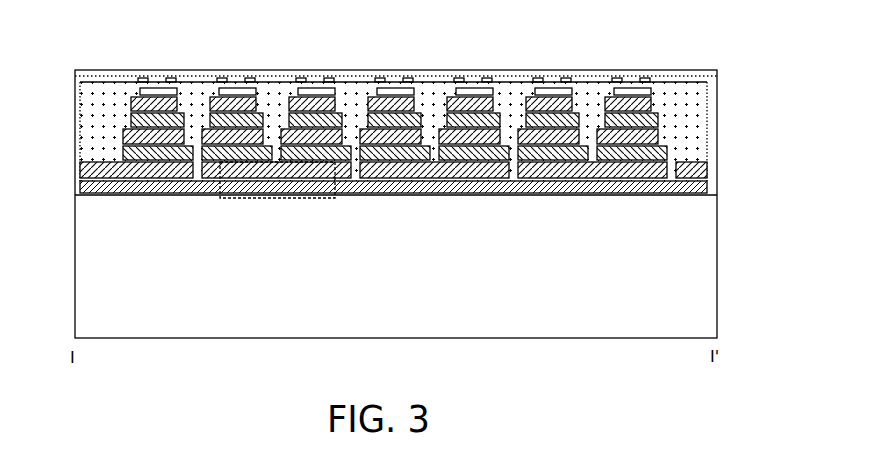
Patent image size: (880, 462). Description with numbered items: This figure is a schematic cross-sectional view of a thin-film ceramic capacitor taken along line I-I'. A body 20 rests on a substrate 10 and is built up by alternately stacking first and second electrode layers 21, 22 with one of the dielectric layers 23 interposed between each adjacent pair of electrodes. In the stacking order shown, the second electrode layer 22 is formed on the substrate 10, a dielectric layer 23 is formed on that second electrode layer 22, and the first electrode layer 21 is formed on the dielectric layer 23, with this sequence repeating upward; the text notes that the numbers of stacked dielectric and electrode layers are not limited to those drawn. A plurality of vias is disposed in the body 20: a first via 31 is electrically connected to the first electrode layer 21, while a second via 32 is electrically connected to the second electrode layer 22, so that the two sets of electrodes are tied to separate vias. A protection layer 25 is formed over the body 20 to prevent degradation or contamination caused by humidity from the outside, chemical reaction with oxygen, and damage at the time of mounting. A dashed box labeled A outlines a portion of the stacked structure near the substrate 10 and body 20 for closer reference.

The substrate 10 is at (705, 262).
The body 20 is at (728, 186).
The first electrode layer 21 is at (80, 153).
The second electrode layer 22 is at (80, 188).
The dielectric layer 23 is at (707, 170).
The protection layer 25 is at (550, 79).
The first via 31 is at (273, 82).
The second via 32 is at (513, 87).
The enlarged region A is at (270, 198).